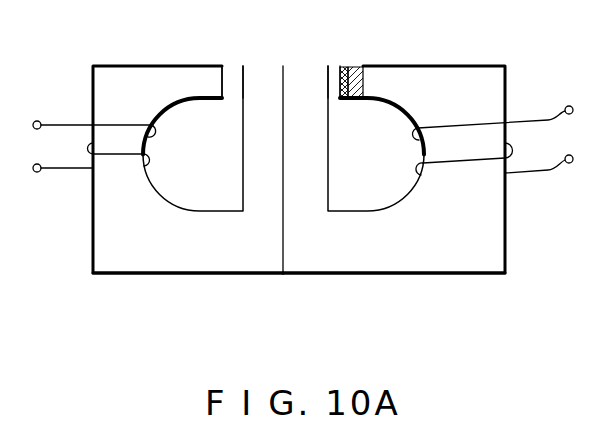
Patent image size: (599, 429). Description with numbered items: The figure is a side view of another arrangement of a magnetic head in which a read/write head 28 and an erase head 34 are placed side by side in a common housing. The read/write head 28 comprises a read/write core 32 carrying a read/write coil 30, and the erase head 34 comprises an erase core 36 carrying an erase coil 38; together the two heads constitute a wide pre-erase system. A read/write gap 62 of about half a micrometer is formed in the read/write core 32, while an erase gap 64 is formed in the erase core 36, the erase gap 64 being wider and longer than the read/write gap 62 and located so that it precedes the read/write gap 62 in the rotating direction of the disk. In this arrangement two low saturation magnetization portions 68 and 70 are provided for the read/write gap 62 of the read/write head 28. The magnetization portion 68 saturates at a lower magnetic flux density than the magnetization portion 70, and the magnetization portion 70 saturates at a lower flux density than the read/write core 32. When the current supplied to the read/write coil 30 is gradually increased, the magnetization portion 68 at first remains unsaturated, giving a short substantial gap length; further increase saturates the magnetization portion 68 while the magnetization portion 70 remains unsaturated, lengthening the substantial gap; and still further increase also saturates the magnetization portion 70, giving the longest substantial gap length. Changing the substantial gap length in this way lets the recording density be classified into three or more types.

The read/write head 28 is at (514, 209).
The read/write coil 30 is at (531, 121).
The read/write core 32 is at (465, 276).
The erase head 34 is at (86, 201).
The erase core 36 is at (141, 276).
The erase coil 38 is at (60, 122).
The read/write gap 62 is at (334, 72).
The erase gap 64 is at (232, 80).
The low saturation magnetization portion 68 is at (345, 66).
The low saturation magnetization portion 70 is at (357, 66).